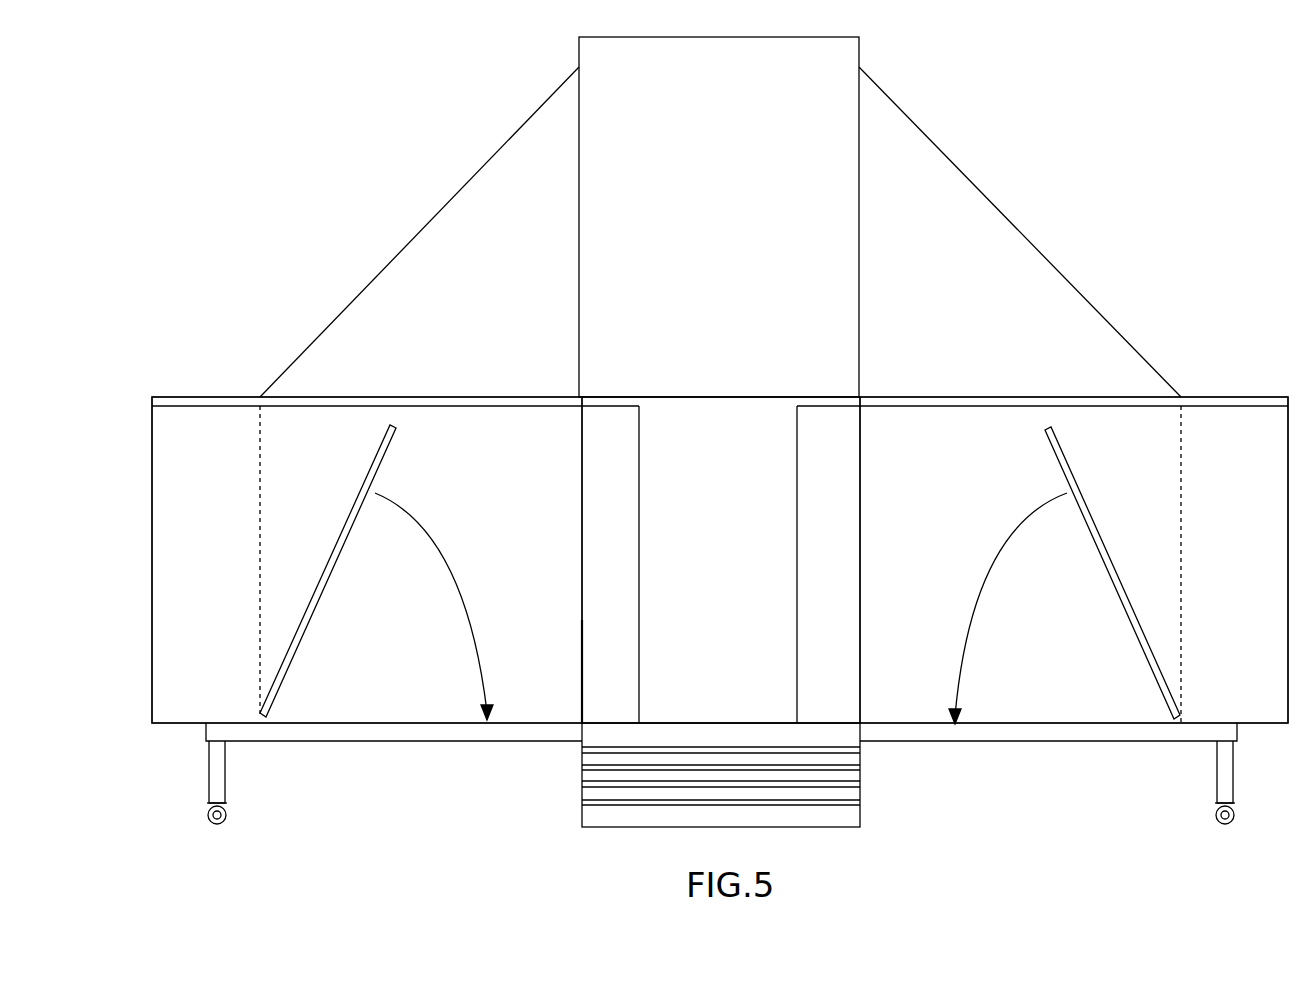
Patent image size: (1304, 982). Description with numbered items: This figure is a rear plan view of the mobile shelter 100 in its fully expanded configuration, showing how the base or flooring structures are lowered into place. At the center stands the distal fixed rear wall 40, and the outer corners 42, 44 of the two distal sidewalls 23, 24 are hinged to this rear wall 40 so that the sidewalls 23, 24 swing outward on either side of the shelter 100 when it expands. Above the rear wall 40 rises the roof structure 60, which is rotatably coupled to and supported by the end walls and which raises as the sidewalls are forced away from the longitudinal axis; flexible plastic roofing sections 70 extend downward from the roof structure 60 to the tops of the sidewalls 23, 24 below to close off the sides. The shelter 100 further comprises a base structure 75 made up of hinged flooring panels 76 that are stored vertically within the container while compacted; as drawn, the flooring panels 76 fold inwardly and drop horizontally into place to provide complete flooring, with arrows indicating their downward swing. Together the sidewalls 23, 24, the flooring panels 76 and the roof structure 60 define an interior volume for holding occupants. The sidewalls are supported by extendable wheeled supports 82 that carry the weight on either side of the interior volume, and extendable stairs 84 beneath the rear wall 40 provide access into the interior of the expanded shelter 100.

The mobile shelter 100 is at (990, 178).
The roof structure 60 is at (805, 60).
The flexible plastic roofing sections 70 is at (1090, 298).
The distal sidewall 23 is at (210, 490).
The distal sidewall 24 is at (1223, 497).
The distal fixed rear wall 40 is at (603, 643).
The outer corner of distal sidewall 42 is at (592, 393).
The outer corner of distal sidewall 44 is at (857, 395).
The hinged flooring panels 76 is at (365, 482).
The base structure 75 is at (1047, 725).
The extendable stairs 84 is at (828, 788).
The extendable wheeled supports 82 is at (217, 787).